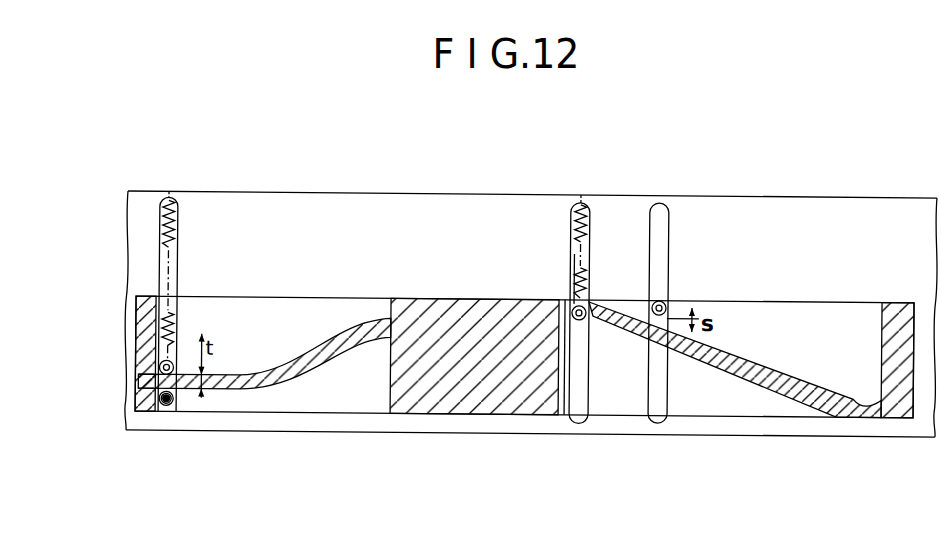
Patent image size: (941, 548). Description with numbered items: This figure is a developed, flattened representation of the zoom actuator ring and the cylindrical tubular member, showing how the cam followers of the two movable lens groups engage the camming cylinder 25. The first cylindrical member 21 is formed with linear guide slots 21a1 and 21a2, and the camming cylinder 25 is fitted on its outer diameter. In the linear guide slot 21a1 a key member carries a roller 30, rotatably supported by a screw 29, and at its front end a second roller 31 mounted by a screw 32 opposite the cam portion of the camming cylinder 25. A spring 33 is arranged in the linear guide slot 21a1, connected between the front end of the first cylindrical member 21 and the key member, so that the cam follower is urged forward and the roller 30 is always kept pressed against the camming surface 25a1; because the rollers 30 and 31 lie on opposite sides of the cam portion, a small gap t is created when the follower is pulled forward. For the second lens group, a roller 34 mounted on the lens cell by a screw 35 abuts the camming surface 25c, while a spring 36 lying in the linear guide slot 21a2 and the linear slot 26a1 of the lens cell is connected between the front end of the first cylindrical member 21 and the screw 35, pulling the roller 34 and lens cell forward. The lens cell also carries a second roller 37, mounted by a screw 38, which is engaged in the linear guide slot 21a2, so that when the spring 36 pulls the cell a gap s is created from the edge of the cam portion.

The first cylindrical member 21 is at (310, 206).
The linear guide slot 21a1 is at (170, 273).
The linear guide slot 21a2 is at (580, 411).
The camming cylinder 25 is at (453, 397).
The camming surface 25a1 is at (346, 348).
The camming surface 25c is at (742, 369).
The linear slot 26a1 is at (574, 248).
The screw 29 is at (162, 400).
The roller 30 is at (170, 408).
The second roller 31 is at (155, 373).
The screw 32 is at (163, 368).
The spring 33 is at (177, 222).
The roller 34 is at (573, 294).
The screw 35 is at (575, 308).
The spring 36 is at (586, 208).
The second roller 37 is at (663, 300).
The screw 38 is at (667, 310).